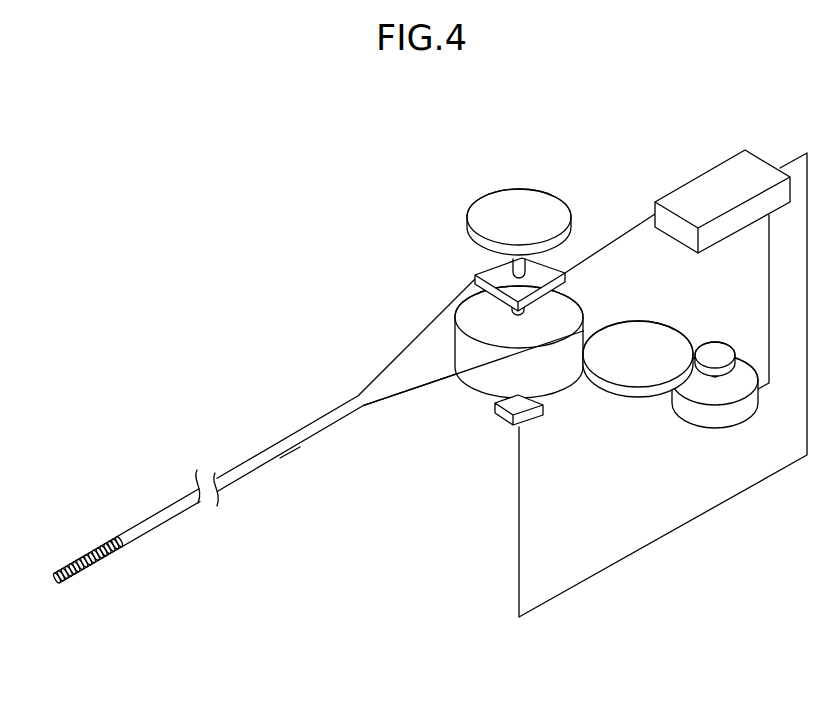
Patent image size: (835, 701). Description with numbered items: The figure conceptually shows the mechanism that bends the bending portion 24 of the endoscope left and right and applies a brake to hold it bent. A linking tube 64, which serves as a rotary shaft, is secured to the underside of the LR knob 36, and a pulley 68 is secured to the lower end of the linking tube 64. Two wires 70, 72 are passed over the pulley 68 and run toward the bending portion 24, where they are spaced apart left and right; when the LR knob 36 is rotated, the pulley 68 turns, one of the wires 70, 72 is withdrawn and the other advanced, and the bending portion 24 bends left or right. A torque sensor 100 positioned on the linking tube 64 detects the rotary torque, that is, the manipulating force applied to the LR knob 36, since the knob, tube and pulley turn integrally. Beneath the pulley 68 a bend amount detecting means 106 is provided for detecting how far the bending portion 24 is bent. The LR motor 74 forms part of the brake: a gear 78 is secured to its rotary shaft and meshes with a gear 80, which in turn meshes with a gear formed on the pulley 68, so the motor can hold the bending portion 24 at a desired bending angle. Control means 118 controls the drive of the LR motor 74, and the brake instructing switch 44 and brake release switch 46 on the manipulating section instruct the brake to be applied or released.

The bending portion 24 is at (88, 548).
The wire 70 is at (157, 513).
The wire 72 is at (299, 448).
The LR knob 36 is at (538, 212).
The linking tube 64 is at (497, 268).
The torque sensor 100 is at (497, 292).
The pulley 68 is at (564, 377).
The bend amount detecting means 106 is at (501, 417).
The gear 80 is at (649, 338).
The gear 78 is at (716, 351).
The LR motor 74 is at (731, 420).
The control means 118 is at (720, 176).
The brake instructing switch 44 is at (724, 176).
The brake release switch 46 is at (757, 172).